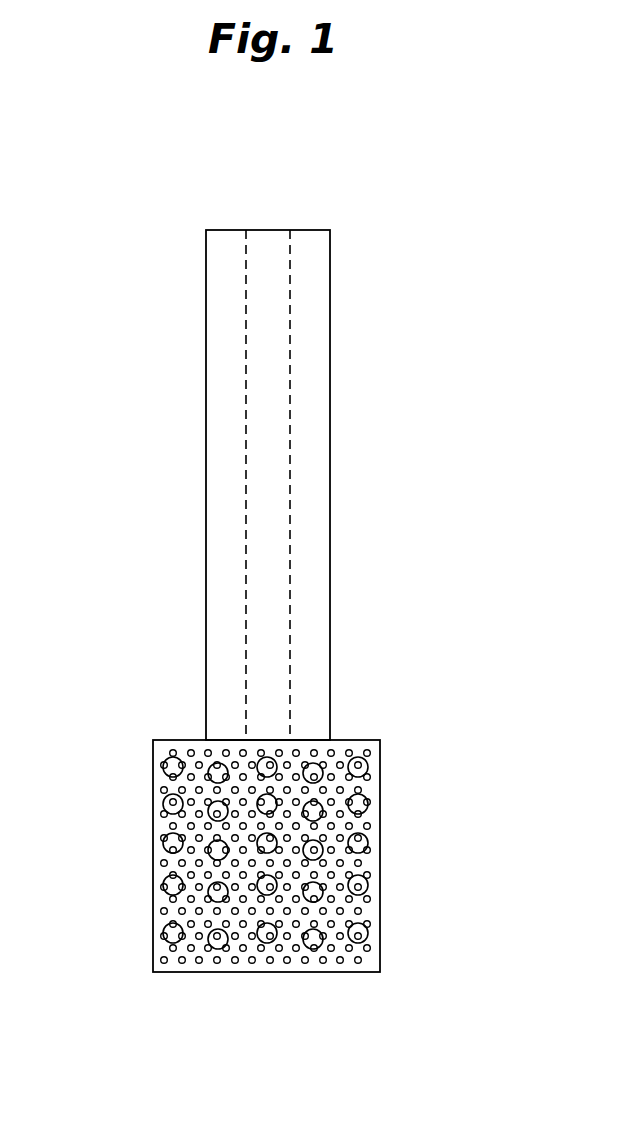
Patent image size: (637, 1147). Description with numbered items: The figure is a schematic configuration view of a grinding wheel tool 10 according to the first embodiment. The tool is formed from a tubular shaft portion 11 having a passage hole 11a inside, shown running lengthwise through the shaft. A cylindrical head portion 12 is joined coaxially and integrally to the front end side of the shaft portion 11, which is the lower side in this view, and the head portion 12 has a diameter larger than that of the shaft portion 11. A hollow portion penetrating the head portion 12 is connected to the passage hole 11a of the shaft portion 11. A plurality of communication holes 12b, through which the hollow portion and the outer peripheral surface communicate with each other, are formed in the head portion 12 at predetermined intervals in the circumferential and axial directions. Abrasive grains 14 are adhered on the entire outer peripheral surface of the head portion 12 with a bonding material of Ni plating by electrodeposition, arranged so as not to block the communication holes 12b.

The grinding wheel tool 10 is at (144, 206).
The shaft portion 11 is at (330, 308).
The passage hole 11a is at (283, 240).
The head portion 12 is at (352, 740).
The communication holes 12b is at (301, 950).
The abrasive grains 14 is at (367, 824).